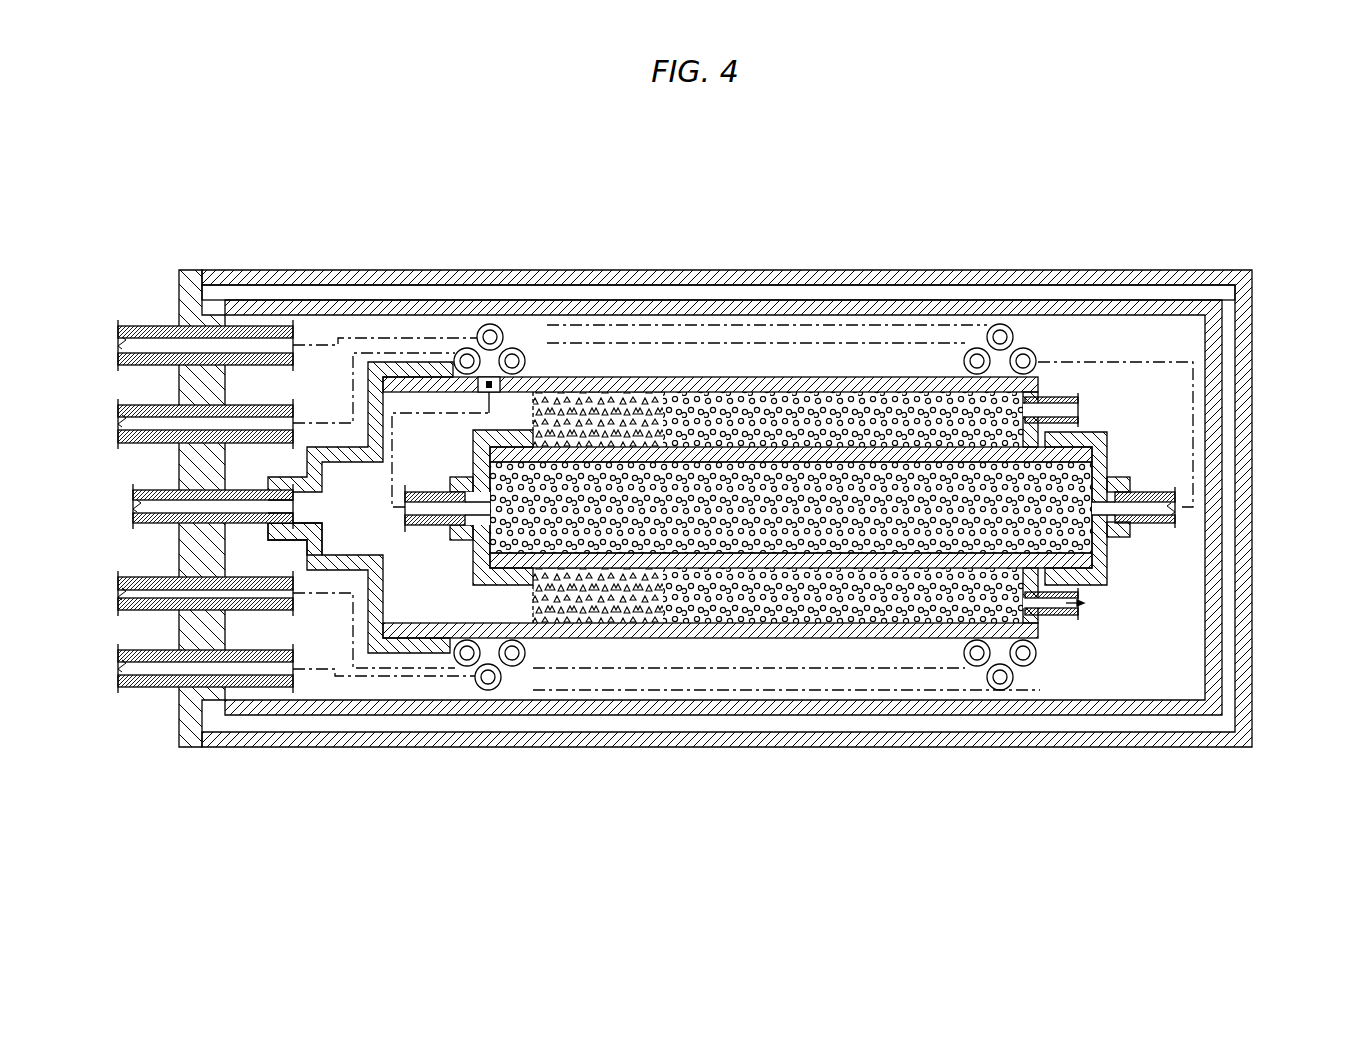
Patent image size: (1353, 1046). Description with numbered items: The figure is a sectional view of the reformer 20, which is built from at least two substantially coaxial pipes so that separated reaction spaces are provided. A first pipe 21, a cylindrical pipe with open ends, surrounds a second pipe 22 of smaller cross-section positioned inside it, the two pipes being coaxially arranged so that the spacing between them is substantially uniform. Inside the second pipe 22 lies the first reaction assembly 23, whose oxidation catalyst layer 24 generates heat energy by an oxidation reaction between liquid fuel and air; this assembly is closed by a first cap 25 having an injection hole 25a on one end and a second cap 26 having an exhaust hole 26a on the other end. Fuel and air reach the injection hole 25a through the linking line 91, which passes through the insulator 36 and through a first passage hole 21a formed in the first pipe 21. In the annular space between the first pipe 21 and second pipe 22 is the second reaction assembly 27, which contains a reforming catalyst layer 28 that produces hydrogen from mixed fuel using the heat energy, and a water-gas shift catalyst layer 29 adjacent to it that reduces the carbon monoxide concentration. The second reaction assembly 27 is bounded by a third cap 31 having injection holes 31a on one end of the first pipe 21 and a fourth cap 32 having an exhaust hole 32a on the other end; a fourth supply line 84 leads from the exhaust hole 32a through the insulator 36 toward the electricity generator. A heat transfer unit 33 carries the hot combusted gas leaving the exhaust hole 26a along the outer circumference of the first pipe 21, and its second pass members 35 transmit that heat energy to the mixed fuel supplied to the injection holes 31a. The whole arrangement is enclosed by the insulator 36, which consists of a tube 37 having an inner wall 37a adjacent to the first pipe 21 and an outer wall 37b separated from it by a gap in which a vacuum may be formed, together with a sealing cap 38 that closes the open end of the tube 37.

The reformer 20 is at (1267, 199).
The first pipe 21 is at (710, 513).
The first passage hole 21a is at (500, 394).
The second pipe 22 is at (837, 560).
The first reaction assembly 23 is at (791, 651).
The oxidation catalyst layer 24 is at (885, 535).
The first cap 25 is at (477, 621).
The injection hole 25a is at (455, 542).
The second cap 26 is at (1180, 617).
The exhaust hole 26a is at (1118, 538).
The second reaction assembly 27 is at (737, 537).
The reforming catalyst layer 28 is at (710, 622).
The water-gas shift catalyst layer 29 is at (622, 640).
The third cap 31 is at (1154, 511).
The injection holes 31a is at (1042, 410).
The fourth cap 32 is at (344, 515).
The exhaust hole 32a is at (287, 532).
The heat transfer unit 33 is at (466, 660).
The second pass members 35 is at (137, 327).
The insulator 36 is at (866, 270).
The tube 37 is at (718, 449).
The inner wall 37a is at (777, 304).
The outer wall 37b is at (760, 219).
The sealing cap 38 is at (180, 283).
The fourth supply line 84 is at (145, 523).
The linking line 91 is at (143, 443).